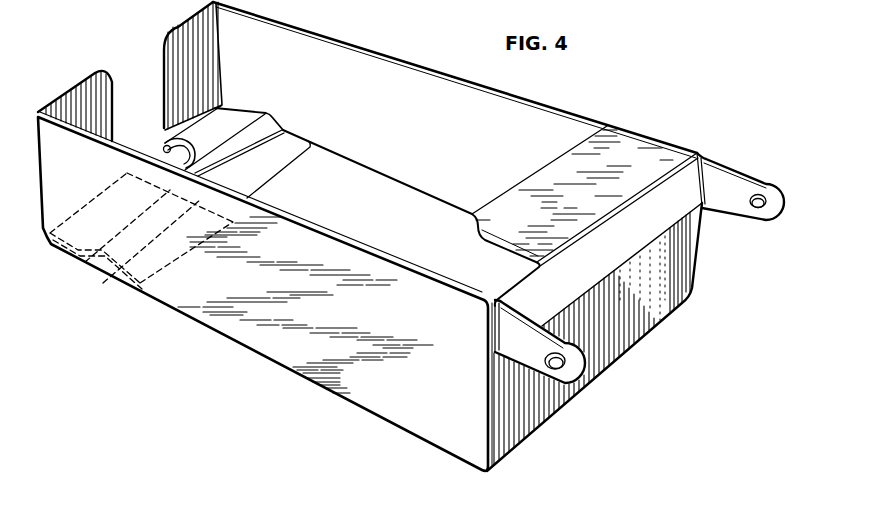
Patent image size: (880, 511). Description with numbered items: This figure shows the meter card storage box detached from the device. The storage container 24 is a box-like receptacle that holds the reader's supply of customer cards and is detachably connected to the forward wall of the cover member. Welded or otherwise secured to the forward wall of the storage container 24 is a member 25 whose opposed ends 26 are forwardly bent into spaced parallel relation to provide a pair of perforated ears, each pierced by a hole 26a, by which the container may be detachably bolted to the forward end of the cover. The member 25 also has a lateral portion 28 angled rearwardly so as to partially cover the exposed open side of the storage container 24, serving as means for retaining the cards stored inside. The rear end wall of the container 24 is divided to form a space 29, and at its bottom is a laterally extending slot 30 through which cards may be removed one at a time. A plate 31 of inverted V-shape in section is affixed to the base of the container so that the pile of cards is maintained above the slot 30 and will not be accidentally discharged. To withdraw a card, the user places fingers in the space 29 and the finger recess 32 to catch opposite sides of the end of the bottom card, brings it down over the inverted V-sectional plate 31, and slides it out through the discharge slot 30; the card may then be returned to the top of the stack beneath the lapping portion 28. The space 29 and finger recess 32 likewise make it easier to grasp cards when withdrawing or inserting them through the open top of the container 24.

The storage container 24 is at (263, 352).
The member 25 is at (643, 240).
The opposed ends 26 is at (735, 162).
The mounting hole 26a is at (757, 210).
The lateral portion 28 is at (652, 143).
The space 29 is at (132, 78).
The slot 30 is at (221, 106).
The plate 31 is at (284, 127).
The finger recess 32 is at (165, 151).